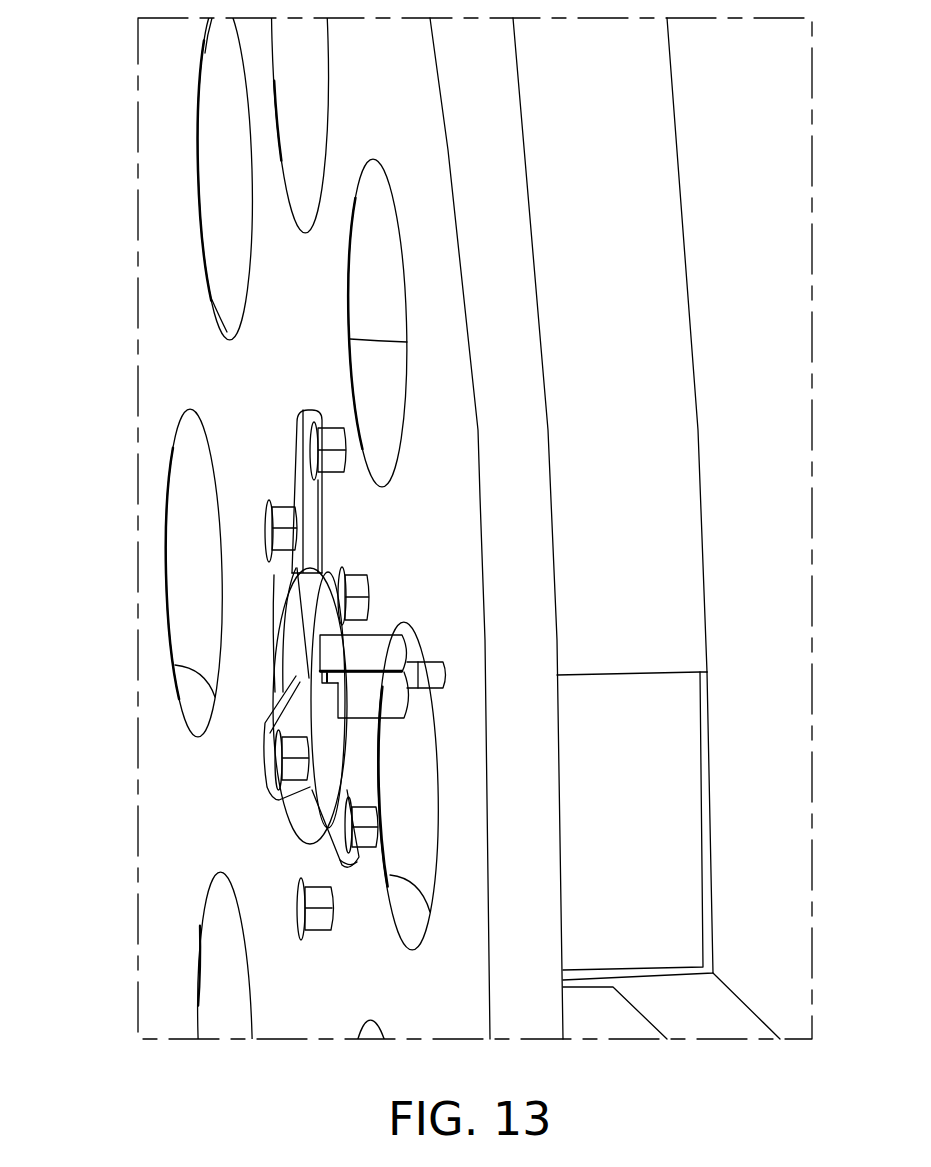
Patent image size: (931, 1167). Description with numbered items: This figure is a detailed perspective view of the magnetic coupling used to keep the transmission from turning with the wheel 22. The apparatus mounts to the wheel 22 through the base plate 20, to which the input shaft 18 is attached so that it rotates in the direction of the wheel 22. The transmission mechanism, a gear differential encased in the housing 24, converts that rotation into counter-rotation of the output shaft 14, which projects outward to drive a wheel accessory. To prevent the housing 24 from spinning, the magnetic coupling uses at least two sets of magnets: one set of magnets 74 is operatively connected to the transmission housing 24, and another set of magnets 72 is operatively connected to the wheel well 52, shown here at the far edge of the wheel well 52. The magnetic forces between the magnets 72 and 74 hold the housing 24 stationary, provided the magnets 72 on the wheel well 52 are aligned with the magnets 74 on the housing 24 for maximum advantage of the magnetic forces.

The output shaft 14 is at (450, 672).
The input shaft 18 is at (328, 677).
The base plate 20 is at (260, 782).
The wheel 22 is at (173, 864).
The housing 24 is at (358, 722).
The wheel well 52 is at (688, 258).
The set of magnets 72 is at (707, 787).
The set of magnets 74 is at (383, 628).